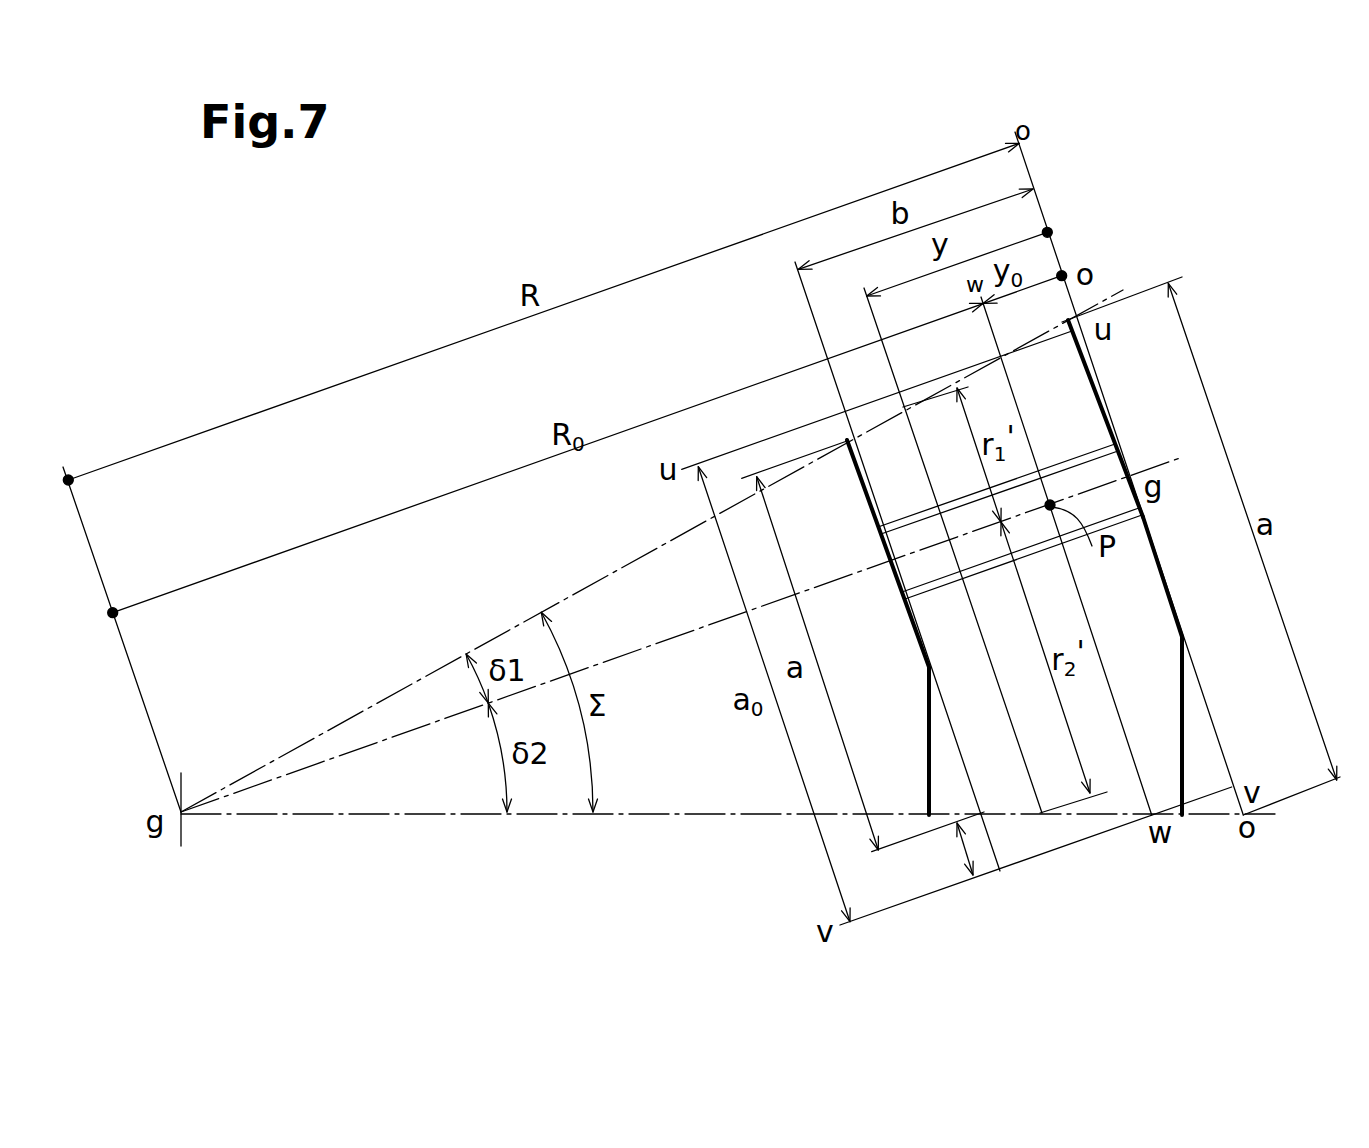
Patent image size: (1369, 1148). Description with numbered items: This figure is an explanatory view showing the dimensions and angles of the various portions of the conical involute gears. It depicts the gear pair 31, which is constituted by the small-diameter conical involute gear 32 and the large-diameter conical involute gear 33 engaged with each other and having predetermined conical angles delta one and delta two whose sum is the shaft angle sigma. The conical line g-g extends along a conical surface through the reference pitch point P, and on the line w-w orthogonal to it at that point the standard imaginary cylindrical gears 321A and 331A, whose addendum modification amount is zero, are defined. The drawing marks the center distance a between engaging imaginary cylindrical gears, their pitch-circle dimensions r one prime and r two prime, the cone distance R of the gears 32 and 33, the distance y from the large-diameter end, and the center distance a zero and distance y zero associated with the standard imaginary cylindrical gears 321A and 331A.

The gear pair 31 is at (1041, 489).
The small-diameter conical involute gear 32 is at (1105, 388).
The large-diameter conical involute gear 33 is at (1166, 576).
The standard imaginary cylindrical gear 321A is at (1030, 447).
The standard imaginary cylindrical gear 331A is at (1113, 693).